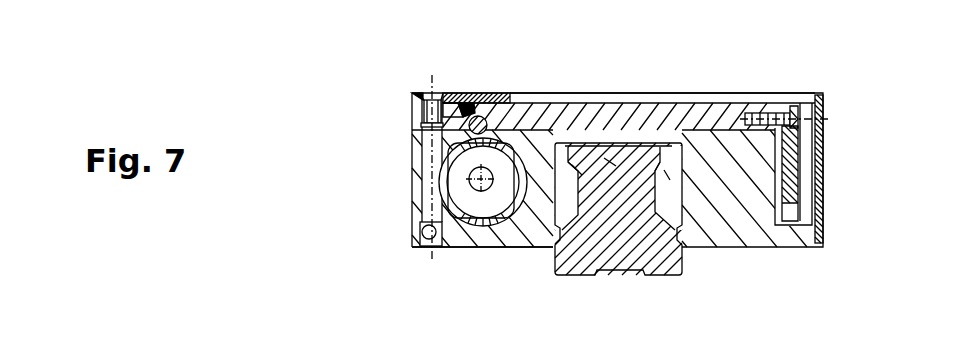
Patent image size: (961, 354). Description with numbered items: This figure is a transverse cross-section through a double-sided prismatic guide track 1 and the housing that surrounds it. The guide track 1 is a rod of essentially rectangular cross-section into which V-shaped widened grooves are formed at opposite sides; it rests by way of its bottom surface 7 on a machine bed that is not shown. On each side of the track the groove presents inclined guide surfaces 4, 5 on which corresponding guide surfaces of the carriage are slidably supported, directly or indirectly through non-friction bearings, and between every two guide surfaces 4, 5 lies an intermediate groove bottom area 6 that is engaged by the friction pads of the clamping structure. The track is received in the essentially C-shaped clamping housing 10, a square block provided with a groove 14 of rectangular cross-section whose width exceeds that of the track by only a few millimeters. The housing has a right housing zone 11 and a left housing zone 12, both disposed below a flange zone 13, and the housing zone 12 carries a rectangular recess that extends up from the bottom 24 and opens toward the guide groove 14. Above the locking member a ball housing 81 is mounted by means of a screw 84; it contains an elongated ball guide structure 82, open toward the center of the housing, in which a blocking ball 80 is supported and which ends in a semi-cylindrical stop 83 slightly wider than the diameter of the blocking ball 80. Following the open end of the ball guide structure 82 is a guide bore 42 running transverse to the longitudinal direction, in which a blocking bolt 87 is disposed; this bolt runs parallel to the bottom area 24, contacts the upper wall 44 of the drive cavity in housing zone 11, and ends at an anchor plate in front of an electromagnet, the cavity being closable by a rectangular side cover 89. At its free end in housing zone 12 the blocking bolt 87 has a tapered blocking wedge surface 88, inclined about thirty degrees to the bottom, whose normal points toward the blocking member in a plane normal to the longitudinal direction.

The guide track 1 is at (646, 146).
The guide surface 4 is at (572, 165).
The guide surface 5 is at (522, 117).
The groove bottom area 6 is at (608, 162).
The bottom surface 7 is at (653, 275).
The clamping housing 10 is at (620, 170).
The housing zone 11 is at (735, 173).
The housing zone 12 is at (415, 162).
The flange zone 13 is at (658, 135).
The groove 14 is at (670, 178).
The bottom 24 is at (429, 244).
The guide bore 42 is at (757, 103).
The upper wall 44 is at (839, 120).
The blocking ball 80 is at (470, 126).
The ball housing 81 is at (413, 97).
The ball guide structure 82 is at (471, 107).
The stop 83 is at (463, 116).
The screw 84 is at (428, 97).
The blocking bolt 87 is at (503, 97).
The blocking wedge surface 88 is at (416, 181).
The side cover 89 is at (818, 213).